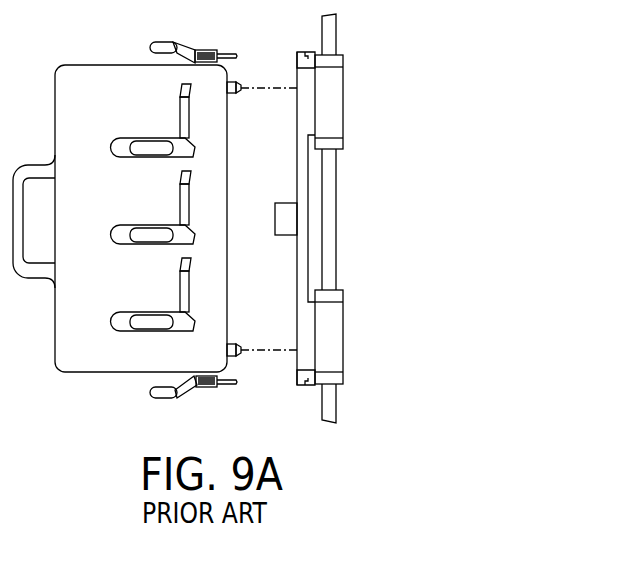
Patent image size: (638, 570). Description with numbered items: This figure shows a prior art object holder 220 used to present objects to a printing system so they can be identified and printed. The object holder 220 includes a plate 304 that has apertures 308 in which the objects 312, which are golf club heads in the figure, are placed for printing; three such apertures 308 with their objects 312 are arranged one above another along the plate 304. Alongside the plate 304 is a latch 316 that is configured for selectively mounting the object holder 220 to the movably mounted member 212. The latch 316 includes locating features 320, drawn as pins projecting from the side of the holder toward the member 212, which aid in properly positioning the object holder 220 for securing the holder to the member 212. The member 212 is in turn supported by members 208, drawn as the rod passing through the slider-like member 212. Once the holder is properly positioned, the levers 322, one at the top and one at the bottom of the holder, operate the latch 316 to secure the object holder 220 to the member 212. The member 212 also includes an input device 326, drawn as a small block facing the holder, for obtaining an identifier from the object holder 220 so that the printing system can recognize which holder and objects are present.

The object holder 220 is at (106, 44).
The plate 304 is at (98, 105).
The apertures 308 is at (114, 160).
The objects 312 is at (153, 158).
The latch 316 is at (243, 66).
The locating features 320 is at (242, 95).
The levers 322 is at (174, 42).
The input device 326 is at (275, 218).
The members 208 is at (338, 35).
The movably mounted member 212 is at (348, 92).